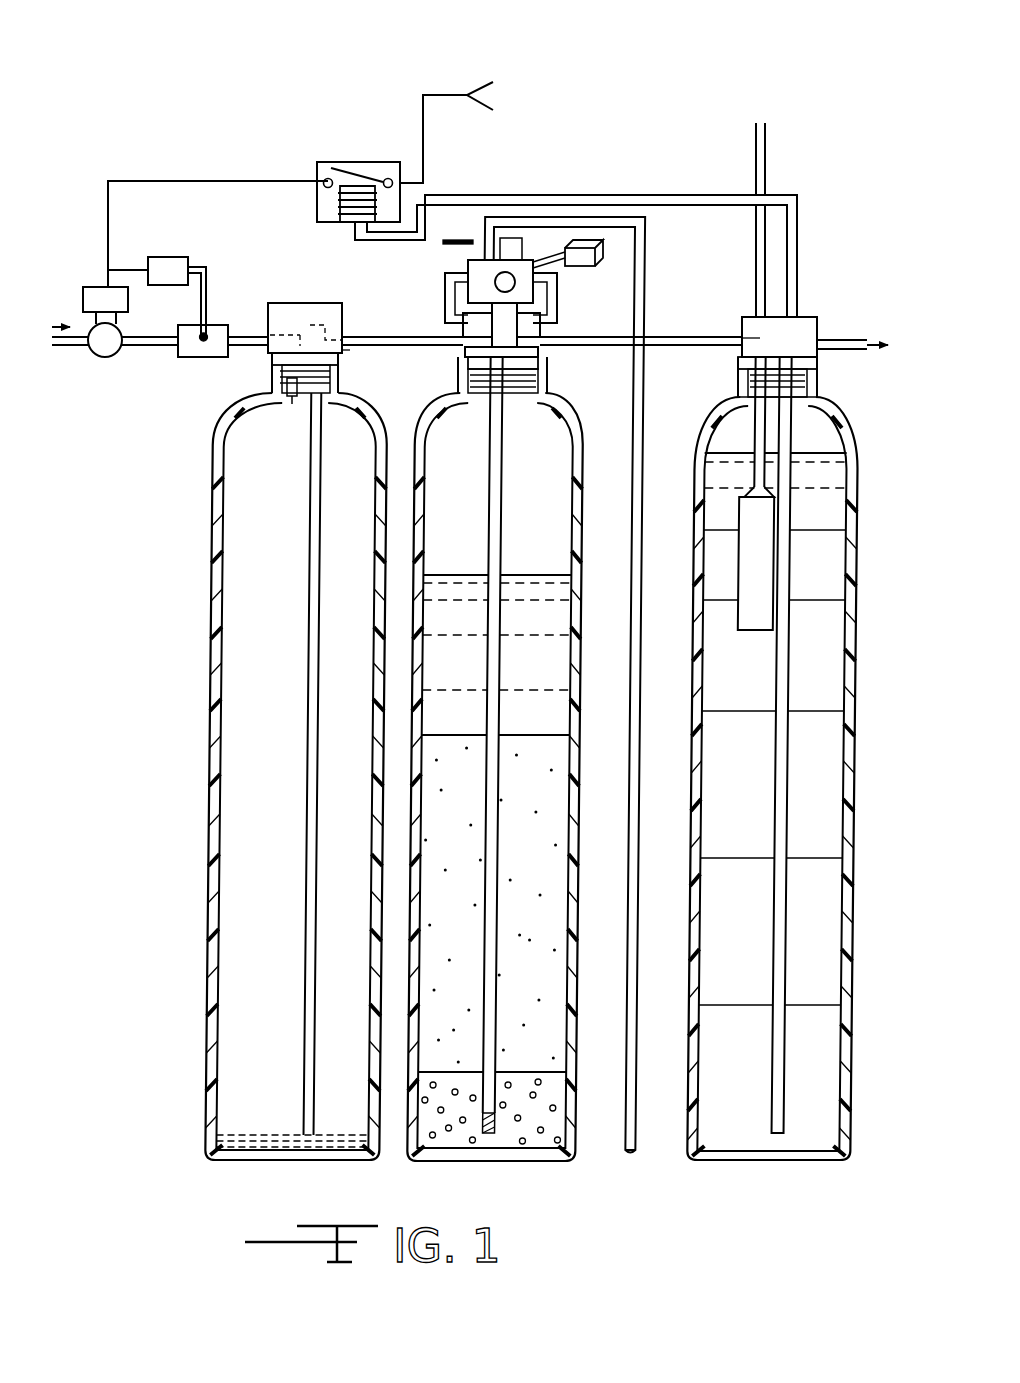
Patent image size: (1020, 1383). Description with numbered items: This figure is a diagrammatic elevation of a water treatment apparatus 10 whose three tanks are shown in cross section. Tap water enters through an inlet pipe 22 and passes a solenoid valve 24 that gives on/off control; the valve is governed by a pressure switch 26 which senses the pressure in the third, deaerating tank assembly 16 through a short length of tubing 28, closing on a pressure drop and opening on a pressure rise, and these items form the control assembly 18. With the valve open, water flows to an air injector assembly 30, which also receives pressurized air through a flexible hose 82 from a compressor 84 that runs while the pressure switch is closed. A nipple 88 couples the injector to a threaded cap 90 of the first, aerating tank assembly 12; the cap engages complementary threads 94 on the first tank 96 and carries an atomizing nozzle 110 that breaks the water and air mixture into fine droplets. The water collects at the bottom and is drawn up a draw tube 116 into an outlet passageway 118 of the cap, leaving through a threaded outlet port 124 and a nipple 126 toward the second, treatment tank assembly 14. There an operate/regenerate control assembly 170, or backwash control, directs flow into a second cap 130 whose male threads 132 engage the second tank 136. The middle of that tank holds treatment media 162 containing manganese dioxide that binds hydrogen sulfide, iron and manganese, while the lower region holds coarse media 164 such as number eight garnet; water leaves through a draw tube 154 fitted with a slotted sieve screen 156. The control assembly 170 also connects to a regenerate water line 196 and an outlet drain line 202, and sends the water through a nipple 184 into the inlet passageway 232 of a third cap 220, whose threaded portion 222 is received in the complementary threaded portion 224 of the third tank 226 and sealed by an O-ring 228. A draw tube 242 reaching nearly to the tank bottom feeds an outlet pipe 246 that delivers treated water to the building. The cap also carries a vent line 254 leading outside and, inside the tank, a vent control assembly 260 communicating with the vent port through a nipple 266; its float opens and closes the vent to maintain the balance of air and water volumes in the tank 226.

The water treatment apparatus 10 is at (692, 68).
The first atomizing or aerating tank assembly 12 is at (203, 487).
The second treatment tank assembly 14 is at (421, 299).
The third deaerating tank assembly 16 is at (832, 316).
The control assembly 18 is at (188, 130).
The inlet pipe or conduit 22 is at (72, 348).
The solenoid valve 24 is at (94, 286).
The pressure switch 26 is at (342, 160).
The pipe or flexible tubing 28 is at (526, 194).
The air injector assembly 30 is at (181, 360).
The pipe or flexible hose 82 is at (209, 283).
The compressor 84 is at (155, 256).
The nipple 88 is at (240, 354).
The first threaded cap or closure 90 is at (295, 312).
The complementary threads 94 is at (281, 397).
The first aerating tank 96 is at (212, 652).
The atomizing nozzle 110 is at (297, 427).
The draw tube 116 is at (306, 802).
The outlet passageway 118 is at (352, 353).
The outlet 124 is at (346, 318).
The nipple 126 is at (380, 318).
The second cap or closure 130 is at (538, 382).
The external or male threads 132 is at (480, 398).
The second treatment tank 136 is at (578, 1135).
The draw tube 154 is at (503, 530).
The slotted riser or sieve screen 156 is at (498, 1122).
The treatment media 162 is at (428, 1044).
The coarse media 164 is at (440, 1138).
The operate/regenerate control assembly 170 is at (573, 279).
The nipple 184 is at (650, 330).
The line 196 is at (455, 238).
The outlet drain line 202 is at (641, 845).
The third cap or closure 220 is at (801, 326).
The threaded portion 222 is at (813, 380).
The complementary threaded portion 224 is at (810, 404).
The third tank 226 is at (851, 607).
The O-ring seal 228 is at (740, 355).
The inlet port or passageway 232 is at (748, 342).
The draw tube 242 is at (792, 776).
The tube or pipe 246 is at (842, 338).
The vent line or tube 254 is at (766, 147).
The vent control assembly 260 is at (733, 646).
The nipple 266 is at (706, 424).